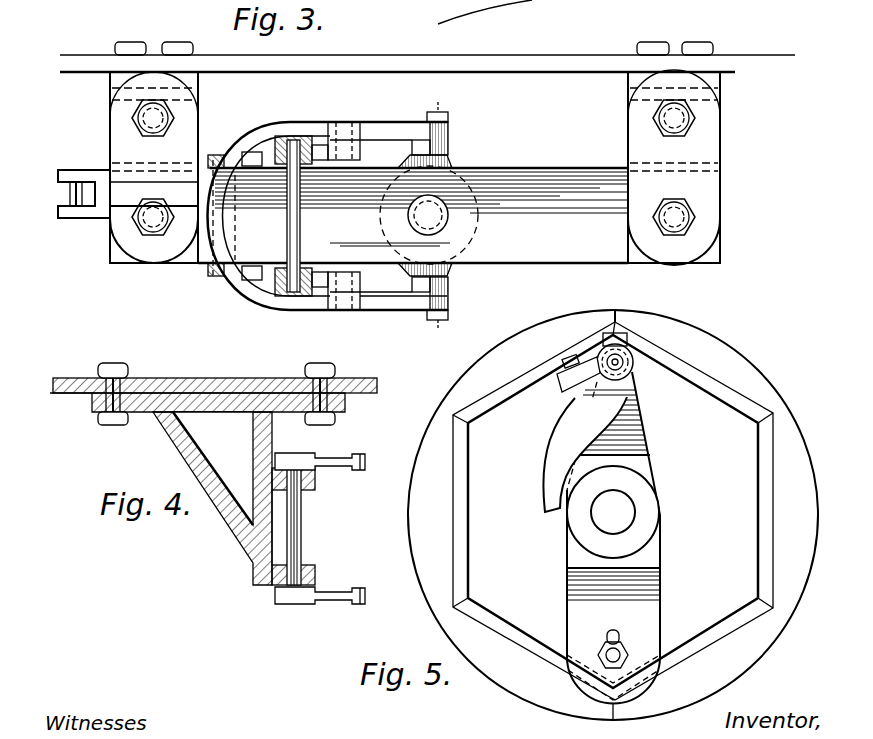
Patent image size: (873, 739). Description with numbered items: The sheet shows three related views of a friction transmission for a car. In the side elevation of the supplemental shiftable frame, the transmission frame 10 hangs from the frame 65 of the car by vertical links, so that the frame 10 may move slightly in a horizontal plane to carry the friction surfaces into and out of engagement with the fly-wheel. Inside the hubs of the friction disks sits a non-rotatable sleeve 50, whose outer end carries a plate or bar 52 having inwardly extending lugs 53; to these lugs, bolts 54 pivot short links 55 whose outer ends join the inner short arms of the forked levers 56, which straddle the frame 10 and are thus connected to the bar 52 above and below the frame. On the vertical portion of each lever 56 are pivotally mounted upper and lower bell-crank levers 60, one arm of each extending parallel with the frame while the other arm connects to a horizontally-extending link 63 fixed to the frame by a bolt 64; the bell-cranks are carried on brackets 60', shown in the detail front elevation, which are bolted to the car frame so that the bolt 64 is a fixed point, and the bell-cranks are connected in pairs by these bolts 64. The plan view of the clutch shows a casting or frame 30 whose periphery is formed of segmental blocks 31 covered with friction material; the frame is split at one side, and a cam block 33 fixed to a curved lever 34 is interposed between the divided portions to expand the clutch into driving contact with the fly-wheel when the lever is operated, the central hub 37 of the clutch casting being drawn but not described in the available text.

In FIG. 3, the frame 10 is at (413, 217).
In FIG. 5, the casting or frame 30 is at (460, 512).
In FIG. 5, the segmental blocks 31 is at (783, 486).
In FIG. 5, the cam block 33 is at (606, 352).
In FIG. 5, the lever 34 is at (568, 428).
In FIG. 5, the hub 37 is at (650, 516).
In FIG. 3, the sleeve 50 is at (444, 219).
In FIG. 3, the plate or bar 52 is at (468, 250).
In FIG. 3, the lugs 53 is at (452, 166).
In FIG. 3, the bolts 54 is at (443, 112).
In FIG. 3, the short links 55 is at (449, 138).
In FIG. 3, the levers 56 is at (386, 304).
In FIG. 3, the bell-crank levers 60 is at (328, 216).
In FIG. 4, the brackets 60' is at (218, 489).
In FIG. 3, the horizontally-extending link 63 is at (214, 160).
In FIG. 3, the bolt 64 is at (287, 229).
In FIG. 4, the bolt 64 is at (301, 532).
In FIG. 3, the frame of the car 65 is at (746, 58).